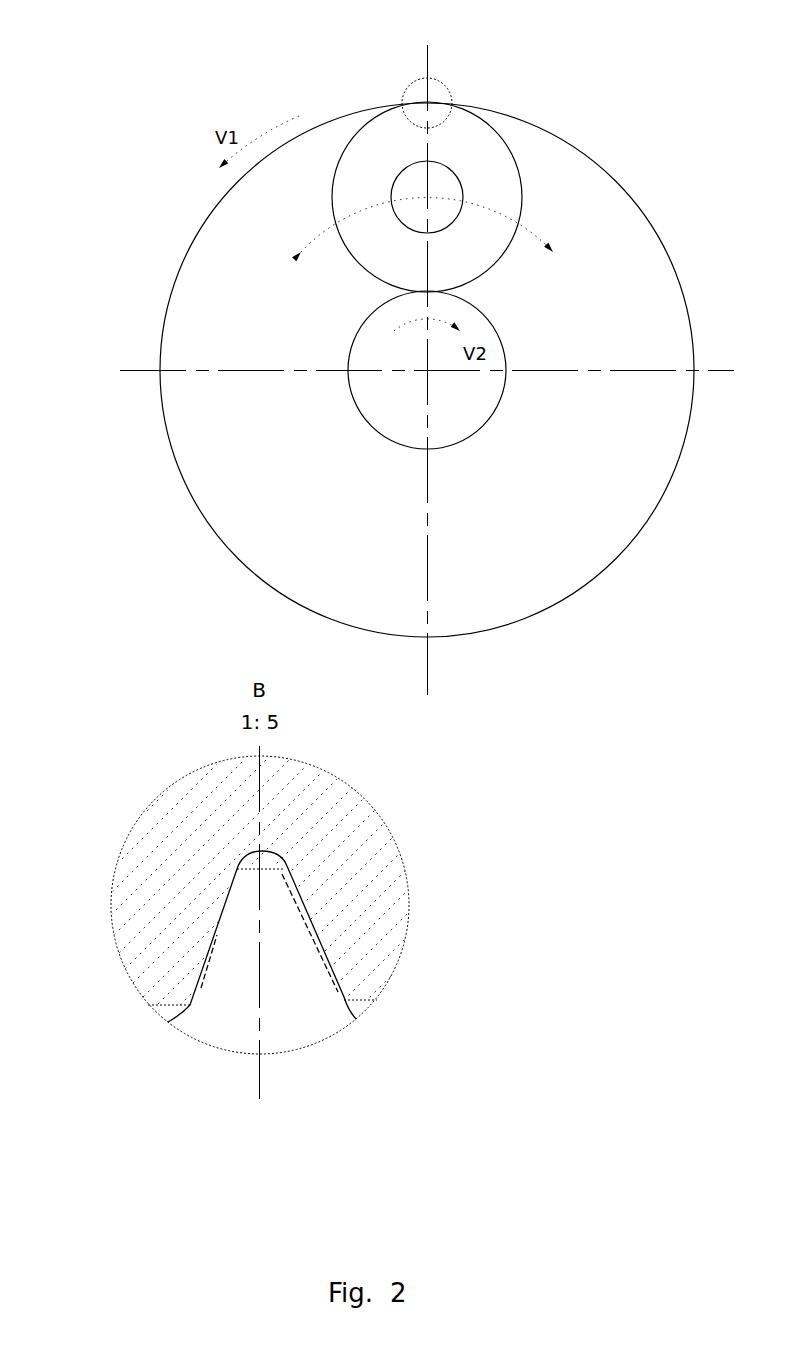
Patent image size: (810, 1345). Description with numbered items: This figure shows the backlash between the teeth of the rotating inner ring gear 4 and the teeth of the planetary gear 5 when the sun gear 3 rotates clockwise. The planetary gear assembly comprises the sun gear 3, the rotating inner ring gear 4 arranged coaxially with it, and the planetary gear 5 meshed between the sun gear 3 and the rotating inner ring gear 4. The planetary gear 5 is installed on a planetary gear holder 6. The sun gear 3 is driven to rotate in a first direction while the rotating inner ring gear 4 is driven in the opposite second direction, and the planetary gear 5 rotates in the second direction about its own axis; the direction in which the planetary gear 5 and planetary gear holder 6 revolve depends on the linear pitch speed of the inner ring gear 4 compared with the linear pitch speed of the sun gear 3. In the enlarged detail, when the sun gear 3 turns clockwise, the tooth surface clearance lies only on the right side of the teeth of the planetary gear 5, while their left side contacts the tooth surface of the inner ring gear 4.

The sun gear 3 is at (332, 479).
The rotating inner ring gear 4 is at (375, 578).
The planetary gear 5 is at (413, 587).
The planetary gear holder 6 is at (352, 139).